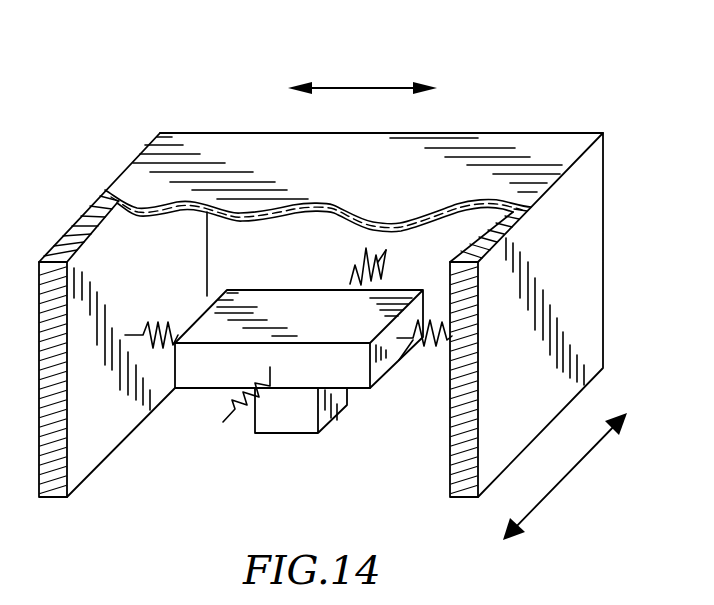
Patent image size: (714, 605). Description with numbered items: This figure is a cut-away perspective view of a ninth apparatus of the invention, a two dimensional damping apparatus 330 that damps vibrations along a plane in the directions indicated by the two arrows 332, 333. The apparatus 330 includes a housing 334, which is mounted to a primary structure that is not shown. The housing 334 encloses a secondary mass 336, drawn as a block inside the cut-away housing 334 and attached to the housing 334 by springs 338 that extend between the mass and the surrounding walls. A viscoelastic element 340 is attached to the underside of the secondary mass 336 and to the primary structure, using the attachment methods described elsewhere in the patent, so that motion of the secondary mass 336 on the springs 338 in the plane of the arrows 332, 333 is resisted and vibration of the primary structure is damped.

The two dimensional damping apparatus 330 is at (123, 70).
The arrow 332 is at (347, 86).
The arrow 333 is at (581, 463).
The housing 334 is at (604, 218).
The secondary mass 336 is at (348, 325).
The springs 338 is at (222, 424).
The viscoelastic element 340 is at (297, 425).